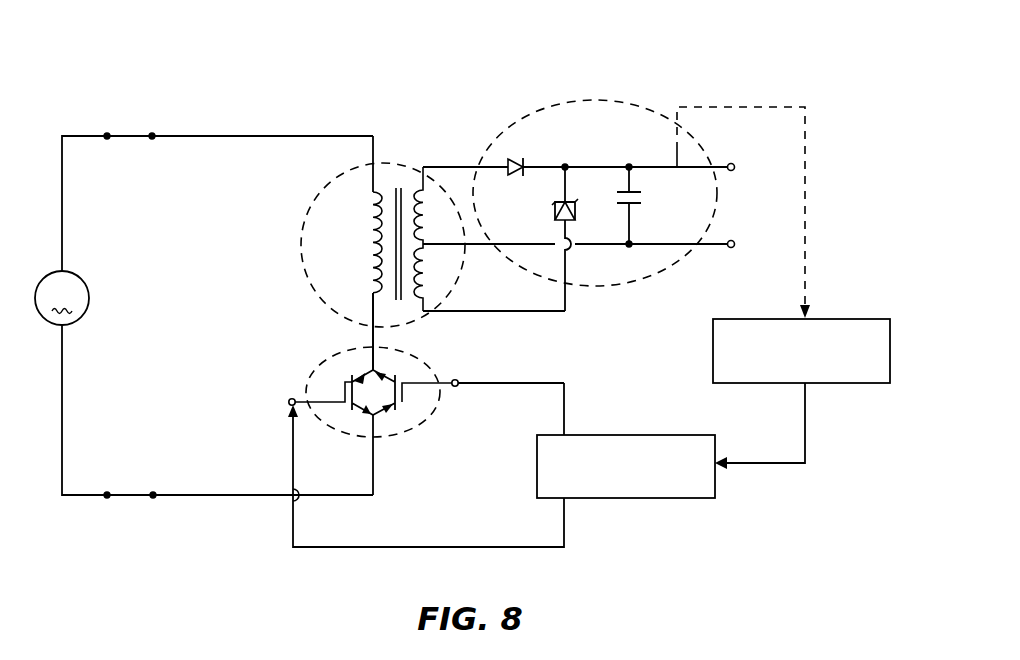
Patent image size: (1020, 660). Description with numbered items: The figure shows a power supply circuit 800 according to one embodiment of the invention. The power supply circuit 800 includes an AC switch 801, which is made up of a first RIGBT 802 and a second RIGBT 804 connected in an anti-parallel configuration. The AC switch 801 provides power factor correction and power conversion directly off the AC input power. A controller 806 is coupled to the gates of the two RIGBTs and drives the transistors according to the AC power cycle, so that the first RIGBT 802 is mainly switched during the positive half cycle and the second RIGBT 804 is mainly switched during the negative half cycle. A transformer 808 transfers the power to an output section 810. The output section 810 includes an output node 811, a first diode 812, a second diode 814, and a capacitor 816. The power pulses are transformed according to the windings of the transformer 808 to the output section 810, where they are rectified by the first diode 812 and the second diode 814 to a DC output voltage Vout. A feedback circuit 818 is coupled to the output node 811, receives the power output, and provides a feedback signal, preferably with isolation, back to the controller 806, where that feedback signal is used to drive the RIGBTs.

The power supply circuit 800 is at (548, 28).
The AC switch 801 is at (458, 388).
The first RIGBT 802 is at (352, 374).
The second RIGBT 804 is at (412, 418).
The controller 806 is at (655, 498).
The transformer 808 is at (321, 197).
The output section 810 is at (622, 100).
The output node 811 is at (742, 114).
The first diode 812 is at (511, 156).
The second diode 814 is at (553, 215).
The capacitor 816 is at (644, 201).
The feedback circuit 818 is at (840, 318).